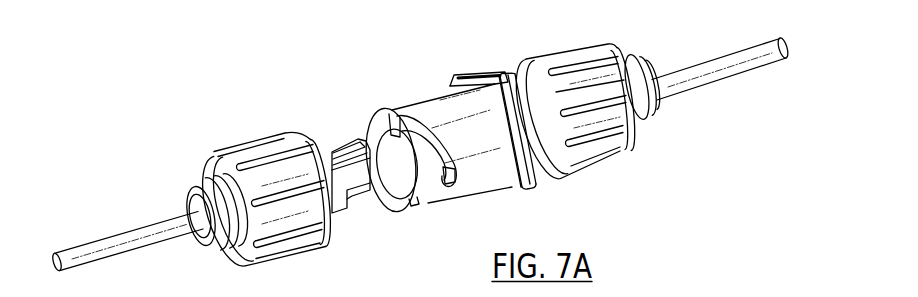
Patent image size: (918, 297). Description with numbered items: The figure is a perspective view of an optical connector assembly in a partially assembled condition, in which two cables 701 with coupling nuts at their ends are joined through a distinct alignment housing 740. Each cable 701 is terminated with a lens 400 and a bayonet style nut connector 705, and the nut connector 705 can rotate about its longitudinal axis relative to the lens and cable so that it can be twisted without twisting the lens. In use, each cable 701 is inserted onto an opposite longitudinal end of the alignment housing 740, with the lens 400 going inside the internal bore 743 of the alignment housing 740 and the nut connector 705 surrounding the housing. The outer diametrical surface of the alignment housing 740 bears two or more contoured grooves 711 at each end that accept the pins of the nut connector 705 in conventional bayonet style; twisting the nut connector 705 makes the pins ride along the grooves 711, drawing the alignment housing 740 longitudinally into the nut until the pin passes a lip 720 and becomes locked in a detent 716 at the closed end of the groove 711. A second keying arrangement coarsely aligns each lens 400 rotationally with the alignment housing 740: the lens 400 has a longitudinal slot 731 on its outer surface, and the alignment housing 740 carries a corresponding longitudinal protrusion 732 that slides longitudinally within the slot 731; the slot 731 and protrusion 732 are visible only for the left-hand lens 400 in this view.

The cable 701 is at (113, 240).
The nut connector 705 is at (256, 153).
The lens 400 is at (338, 153).
The longitudinal slot 731 is at (340, 154).
The groove 711 is at (466, 161).
The longitudinal protrusion 732 is at (393, 118).
The internal bore 743 is at (391, 146).
The detent 716 is at (441, 183).
The lip 720 is at (433, 192).
The alignment housing 740 is at (526, 182).